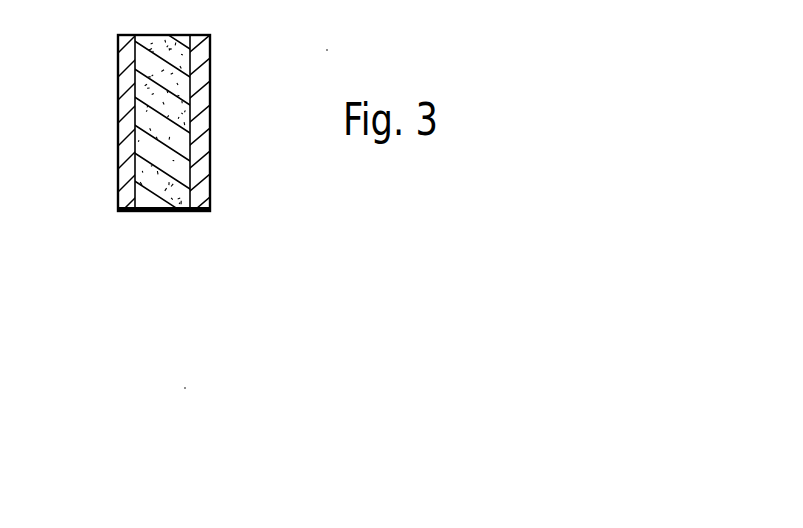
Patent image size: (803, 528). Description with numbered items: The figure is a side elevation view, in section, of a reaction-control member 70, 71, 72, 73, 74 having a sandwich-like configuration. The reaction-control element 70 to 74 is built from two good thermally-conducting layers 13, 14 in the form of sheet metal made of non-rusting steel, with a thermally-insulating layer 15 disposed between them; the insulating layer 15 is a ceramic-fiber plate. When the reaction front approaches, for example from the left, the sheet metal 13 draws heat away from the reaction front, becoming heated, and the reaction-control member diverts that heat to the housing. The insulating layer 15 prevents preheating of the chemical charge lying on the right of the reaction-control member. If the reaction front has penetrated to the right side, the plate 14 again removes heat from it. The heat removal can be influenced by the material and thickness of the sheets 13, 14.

The thermally-conducting layer 13 is at (125, 194).
The thermally-conducting layer 14 is at (200, 190).
The thermally-insulating layer 15 is at (175, 213).
The reaction-control member 70 is at (259, 144).
The reaction-control member 71 is at (259, 144).
The reaction-control member 72 is at (259, 144).
The reaction-control member 73 is at (259, 144).
The reaction-control member 74 is at (259, 144).